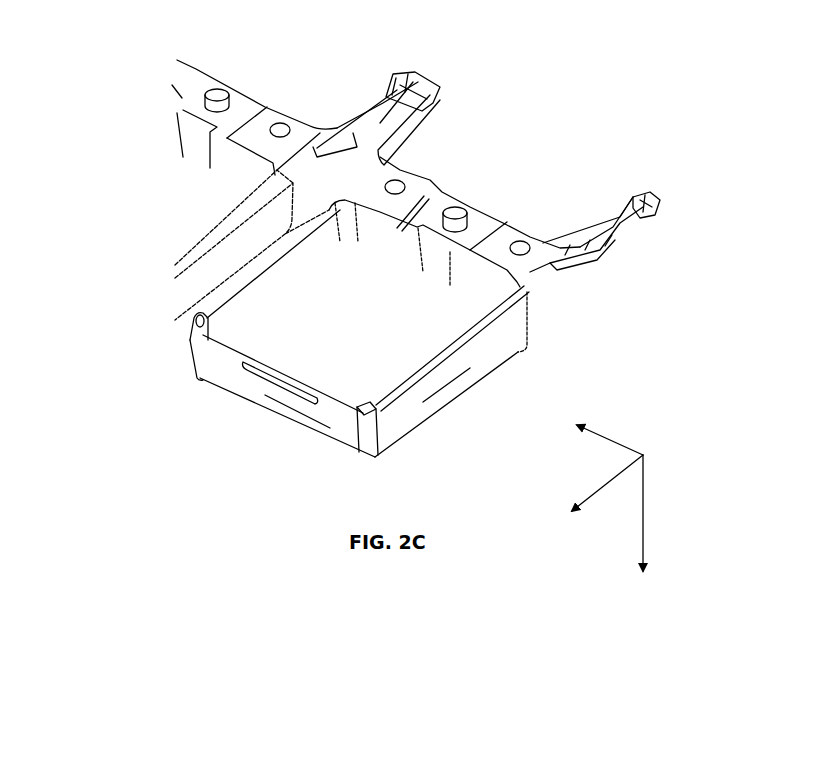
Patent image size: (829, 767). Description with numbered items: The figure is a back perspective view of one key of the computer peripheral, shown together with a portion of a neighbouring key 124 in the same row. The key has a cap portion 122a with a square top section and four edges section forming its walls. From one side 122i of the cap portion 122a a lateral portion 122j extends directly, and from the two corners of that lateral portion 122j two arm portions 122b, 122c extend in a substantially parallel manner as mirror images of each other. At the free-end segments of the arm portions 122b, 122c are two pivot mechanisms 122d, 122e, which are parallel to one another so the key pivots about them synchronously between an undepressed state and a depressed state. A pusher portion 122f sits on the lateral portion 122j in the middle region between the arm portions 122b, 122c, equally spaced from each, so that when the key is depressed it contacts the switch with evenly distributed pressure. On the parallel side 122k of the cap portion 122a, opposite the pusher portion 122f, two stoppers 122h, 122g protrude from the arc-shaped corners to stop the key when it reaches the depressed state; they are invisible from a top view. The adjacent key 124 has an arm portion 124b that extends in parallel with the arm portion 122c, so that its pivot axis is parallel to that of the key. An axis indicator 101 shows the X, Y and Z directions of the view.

The key 124 is at (196, 100).
The arm portion 124b is at (378, 107).
The pivot mechanism 122e is at (430, 90).
The arm portion 122c is at (392, 122).
The pusher portion 122f is at (458, 218).
The side 122i is at (537, 207).
The pivot mechanism 122d is at (633, 196).
The arm portion 122b is at (603, 255).
The lateral portion 122j is at (493, 250).
The cap portion 122a is at (455, 382).
The stopper 122h is at (197, 330).
The parallel side 122k is at (257, 427).
The stopper 122g is at (373, 409).
The coordinate system 101 is at (600, 582).